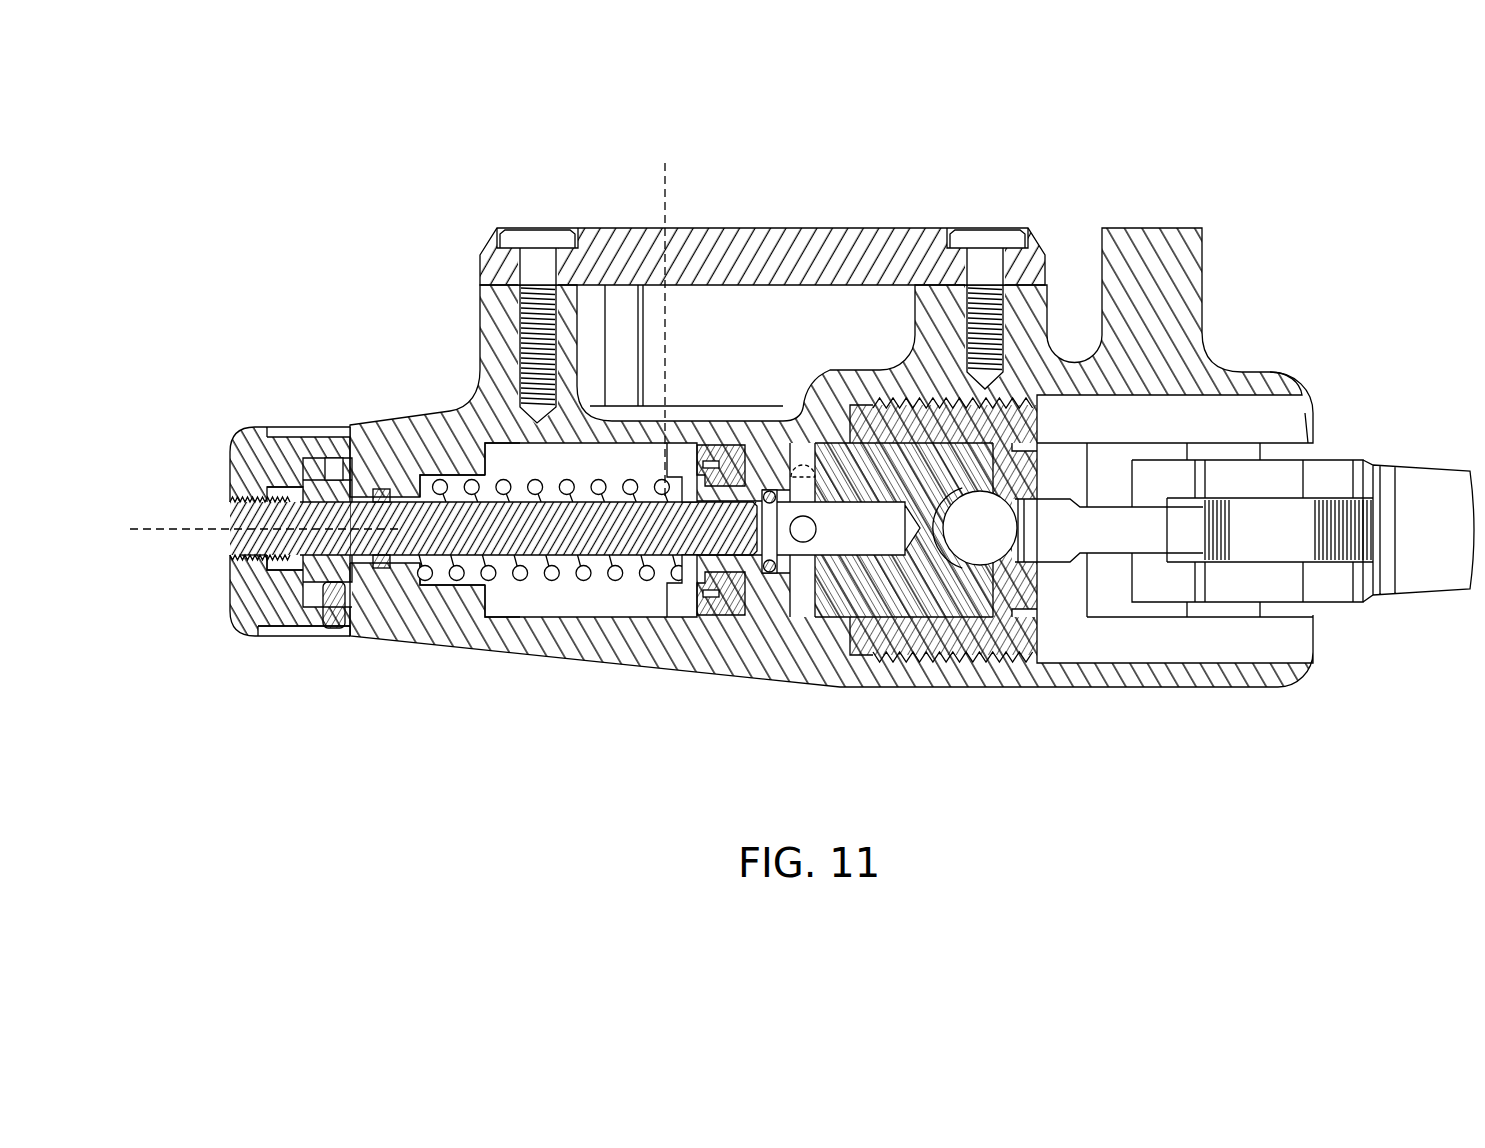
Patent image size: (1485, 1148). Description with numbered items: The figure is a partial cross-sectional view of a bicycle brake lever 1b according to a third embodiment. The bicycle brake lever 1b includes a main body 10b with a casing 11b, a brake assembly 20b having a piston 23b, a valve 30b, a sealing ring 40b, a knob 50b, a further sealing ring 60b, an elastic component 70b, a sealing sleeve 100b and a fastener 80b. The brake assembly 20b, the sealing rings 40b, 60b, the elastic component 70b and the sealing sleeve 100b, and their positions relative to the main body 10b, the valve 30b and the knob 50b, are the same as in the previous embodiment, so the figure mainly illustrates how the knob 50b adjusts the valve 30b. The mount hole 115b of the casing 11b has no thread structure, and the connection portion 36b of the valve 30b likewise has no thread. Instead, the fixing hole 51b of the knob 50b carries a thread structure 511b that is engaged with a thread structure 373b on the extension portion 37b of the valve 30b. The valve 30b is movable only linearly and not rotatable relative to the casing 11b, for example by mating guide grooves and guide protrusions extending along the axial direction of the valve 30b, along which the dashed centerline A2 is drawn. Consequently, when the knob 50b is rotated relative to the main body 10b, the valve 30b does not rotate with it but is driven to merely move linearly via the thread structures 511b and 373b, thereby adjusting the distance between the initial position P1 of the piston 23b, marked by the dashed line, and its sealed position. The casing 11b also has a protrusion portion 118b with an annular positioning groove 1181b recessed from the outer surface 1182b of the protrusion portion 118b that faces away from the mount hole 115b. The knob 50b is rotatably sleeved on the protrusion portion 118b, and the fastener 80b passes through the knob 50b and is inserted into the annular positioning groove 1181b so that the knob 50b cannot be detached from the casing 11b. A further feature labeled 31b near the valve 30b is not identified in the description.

The bicycle brake lever 1b is at (286, 300).
The main body 10b is at (845, 215).
The casing 11b is at (833, 673).
The brake assembly 20b is at (1373, 445).
The piston 23b is at (730, 583).
The valve 30b is at (521, 599).
The piston chamber 31b is at (492, 493).
The connection portion 36b is at (440, 537).
The extension portion 37b is at (287, 557).
The sealing ring 40b is at (770, 573).
The knob 50b is at (232, 452).
The fixing hole 51b is at (227, 558).
The thread structure 511b is at (248, 513).
The sealing ring 60b is at (383, 570).
The elastic component 70b is at (550, 577).
The fastener 80b is at (333, 630).
The sealing sleeve 100b is at (700, 617).
The mount hole 115b is at (295, 492).
The protrusion portion 118b is at (313, 587).
The annular positioning groove 1181b is at (335, 467).
The outer surface 1182b is at (312, 455).
The thread structure 373b is at (253, 560).
The axis A2 is at (178, 532).
The initial position P1 is at (662, 182).